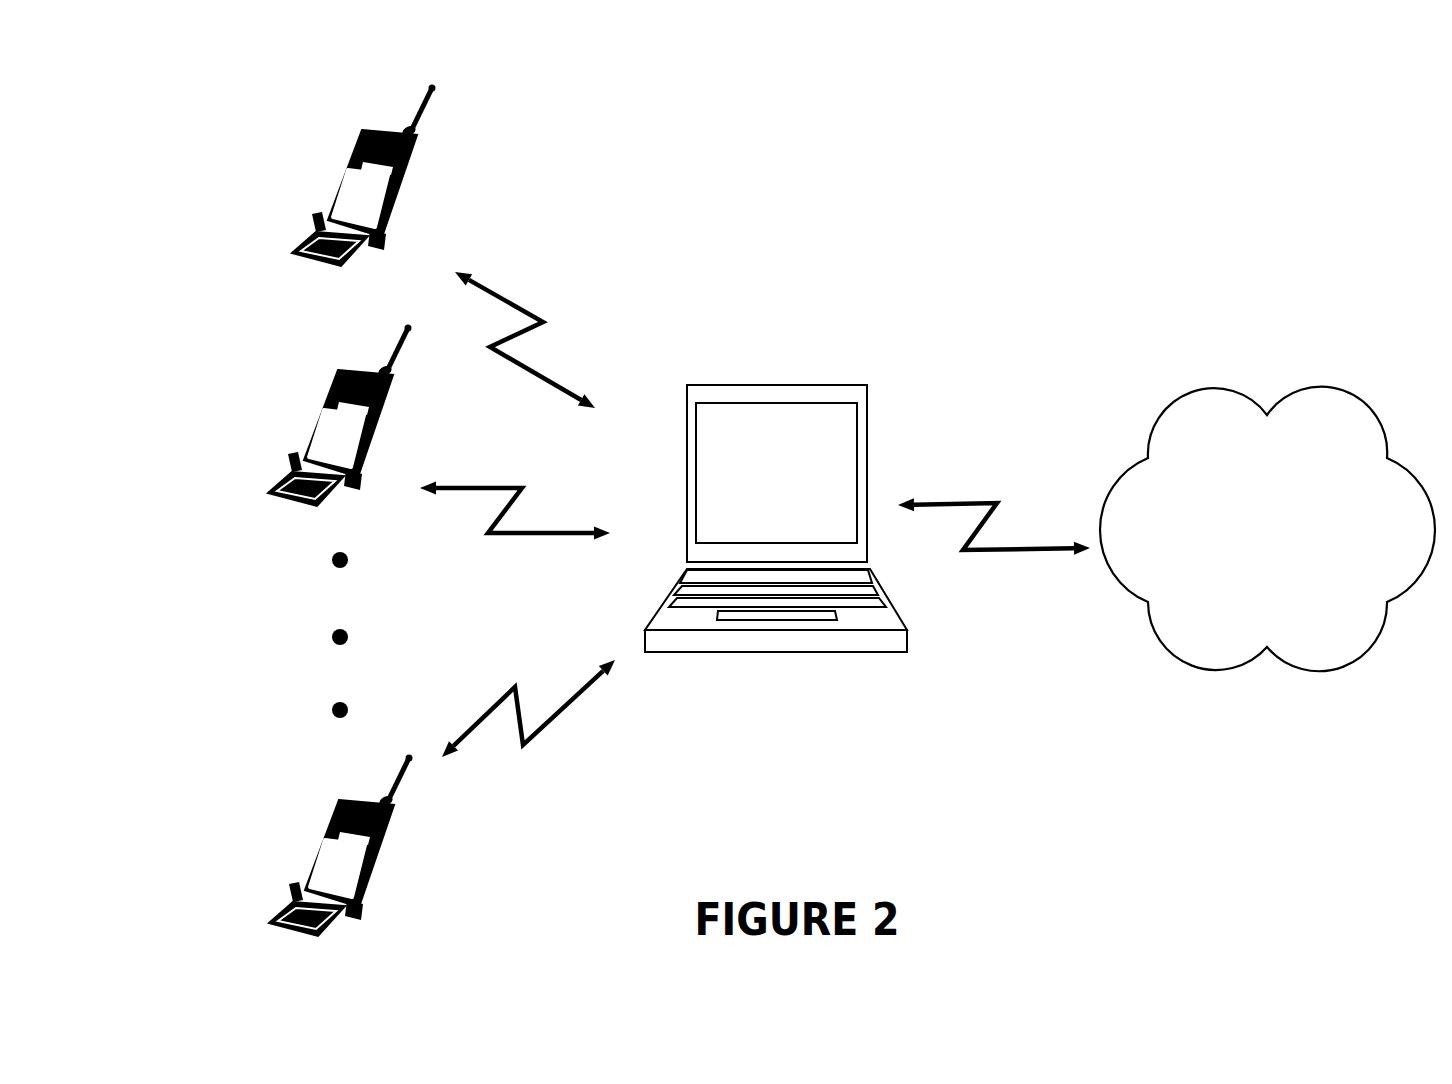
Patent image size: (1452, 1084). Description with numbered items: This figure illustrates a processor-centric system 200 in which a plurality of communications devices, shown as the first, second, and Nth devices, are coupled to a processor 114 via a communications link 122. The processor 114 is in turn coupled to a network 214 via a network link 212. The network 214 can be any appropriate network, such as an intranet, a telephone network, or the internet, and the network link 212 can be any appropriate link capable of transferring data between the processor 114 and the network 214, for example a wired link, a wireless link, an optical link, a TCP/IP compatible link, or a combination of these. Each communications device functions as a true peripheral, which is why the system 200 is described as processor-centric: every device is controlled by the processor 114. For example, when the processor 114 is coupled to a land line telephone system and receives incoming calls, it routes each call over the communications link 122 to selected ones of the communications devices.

The processor-centric system 200 is at (735, 195).
The communications link 122 is at (623, 800).
The processor 114 is at (765, 351).
The network link 212 is at (988, 583).
The network 214 is at (1209, 355).